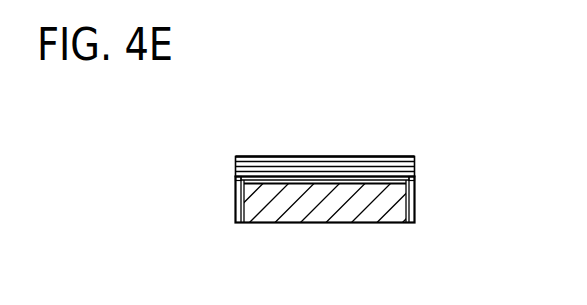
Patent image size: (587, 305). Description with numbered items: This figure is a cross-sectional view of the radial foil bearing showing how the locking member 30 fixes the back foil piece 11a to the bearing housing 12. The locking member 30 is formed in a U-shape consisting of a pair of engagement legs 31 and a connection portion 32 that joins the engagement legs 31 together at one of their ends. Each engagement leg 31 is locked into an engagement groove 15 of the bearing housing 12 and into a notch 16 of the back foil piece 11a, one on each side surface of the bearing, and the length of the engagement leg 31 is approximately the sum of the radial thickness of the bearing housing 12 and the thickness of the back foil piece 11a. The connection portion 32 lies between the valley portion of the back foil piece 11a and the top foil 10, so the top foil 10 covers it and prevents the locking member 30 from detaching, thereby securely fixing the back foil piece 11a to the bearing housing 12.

The top foil 10 is at (309, 156).
The back foil piece 11a is at (338, 181).
The bearing housing 12 is at (338, 207).
The engagement groove 15 is at (238, 208).
The notch 16 is at (238, 178).
The locking member 30 is at (421, 158).
The engagement leg 31 is at (235, 190).
The connection portion 32 is at (370, 167).